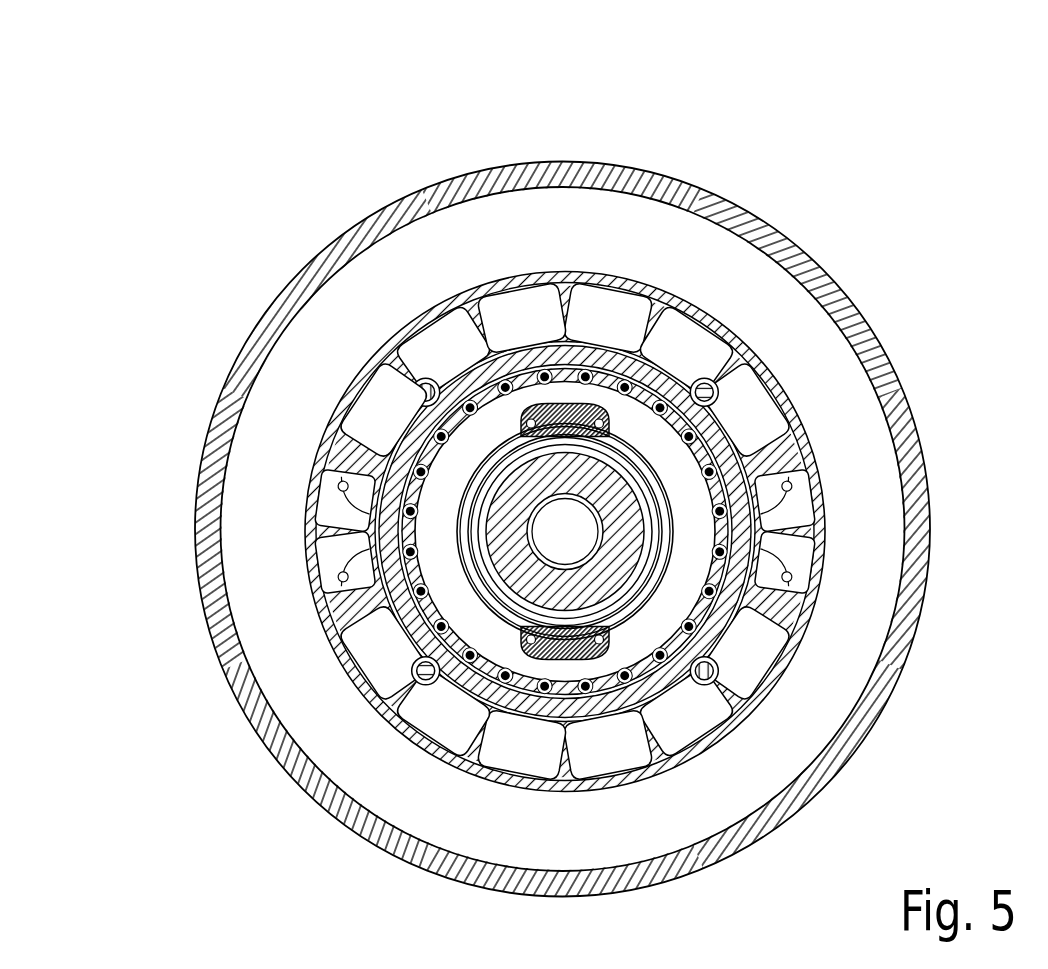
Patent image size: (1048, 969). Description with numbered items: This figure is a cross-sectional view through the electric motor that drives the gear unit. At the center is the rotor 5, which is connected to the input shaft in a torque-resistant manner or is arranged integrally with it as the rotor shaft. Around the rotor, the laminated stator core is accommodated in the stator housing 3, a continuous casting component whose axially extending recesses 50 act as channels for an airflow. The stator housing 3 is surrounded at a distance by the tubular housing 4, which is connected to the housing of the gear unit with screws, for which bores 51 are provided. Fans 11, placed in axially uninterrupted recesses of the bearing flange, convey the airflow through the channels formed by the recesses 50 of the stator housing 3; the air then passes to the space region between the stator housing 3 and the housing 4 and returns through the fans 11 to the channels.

The stator housing 3 is at (442, 571).
The housing 4 is at (327, 268).
The rotor 5 is at (558, 527).
The fan 11 is at (338, 492).
The recess in stator housing 50 is at (370, 412).
The bore for screws 51 is at (417, 676).